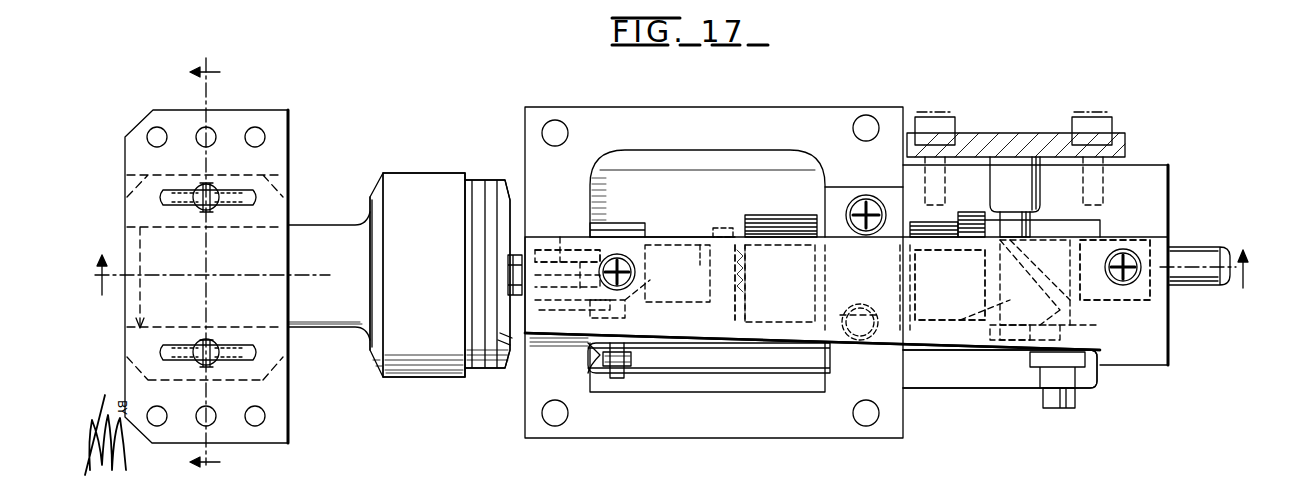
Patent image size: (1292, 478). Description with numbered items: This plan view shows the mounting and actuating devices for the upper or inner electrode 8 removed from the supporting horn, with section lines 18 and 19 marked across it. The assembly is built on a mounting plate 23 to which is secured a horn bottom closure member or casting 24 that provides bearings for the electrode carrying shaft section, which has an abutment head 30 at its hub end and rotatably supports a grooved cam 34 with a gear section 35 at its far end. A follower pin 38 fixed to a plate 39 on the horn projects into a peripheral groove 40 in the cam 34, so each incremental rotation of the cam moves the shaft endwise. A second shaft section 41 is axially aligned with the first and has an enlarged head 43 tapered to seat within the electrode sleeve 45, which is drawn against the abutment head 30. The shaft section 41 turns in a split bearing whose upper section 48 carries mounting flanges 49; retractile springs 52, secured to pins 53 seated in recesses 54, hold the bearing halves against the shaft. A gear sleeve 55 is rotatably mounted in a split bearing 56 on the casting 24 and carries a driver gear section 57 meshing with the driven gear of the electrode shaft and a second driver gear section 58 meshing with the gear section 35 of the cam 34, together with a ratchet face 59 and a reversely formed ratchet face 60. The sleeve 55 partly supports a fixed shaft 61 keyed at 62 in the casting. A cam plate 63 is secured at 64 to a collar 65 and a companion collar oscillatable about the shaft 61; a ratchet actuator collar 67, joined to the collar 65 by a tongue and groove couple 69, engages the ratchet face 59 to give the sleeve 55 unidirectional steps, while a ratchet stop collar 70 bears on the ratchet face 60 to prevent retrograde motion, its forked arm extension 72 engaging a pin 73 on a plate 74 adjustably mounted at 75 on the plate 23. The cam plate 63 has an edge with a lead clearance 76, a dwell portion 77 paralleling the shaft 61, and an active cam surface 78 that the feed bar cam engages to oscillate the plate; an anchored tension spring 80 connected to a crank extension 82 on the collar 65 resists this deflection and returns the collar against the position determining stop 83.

The upper or inner electrode 8 is at (408, 170).
The section line 18 is at (205, 253).
The section line 19 is at (668, 272).
The mounting plate 23 is at (840, 97).
The horn bottom closure member or casting 24 is at (716, 170).
The abutment head 30 is at (512, 180).
The grooved cam 34 is at (1100, 225).
The gear section 35 is at (970, 212).
The follower pin 38 is at (1040, 200).
The plate 39 is at (1003, 133).
The peripheral groove 40 is at (1035, 230).
The shaft section 41 is at (320, 228).
The enlarged head 43 is at (372, 197).
The electrode sleeve 45 is at (425, 183).
The upper section of split bearing 48 is at (290, 315).
The mounting flanges 49 is at (280, 116).
The retractile springs 52 is at (214, 192).
The pins 53 is at (172, 194).
The recesses 54 is at (246, 192).
The gear sleeve 55 is at (820, 282).
The split bearing 56 is at (855, 190).
The driver gear section 57 is at (790, 206).
The driver gear section 58 is at (920, 240).
The ratchet face 59 is at (748, 257).
The ratchet face 60 is at (960, 283).
The fixed shaft 61 is at (512, 272).
The key 62 is at (560, 240).
The cam plate 63 is at (682, 237).
The securing means 64 is at (612, 265).
The collar 65 is at (625, 232).
The ratchet actuator collar 67 is at (704, 262).
The tongue and groove couple 69 is at (650, 280).
The ratchet stop collar 70 is at (990, 325).
The forked arm extension 72 is at (985, 355).
The pin 73 is at (1030, 365).
The plate 74 is at (1095, 325).
The adjustable mounting 75 is at (1068, 408).
The lead clearance 76 is at (520, 358).
The dwell portion 77 is at (642, 334).
The active cam surface 78 is at (738, 345).
The anchored tension spring 80 is at (600, 370).
The crank extension 82 is at (617, 378).
The position determining stop 83 is at (578, 352).